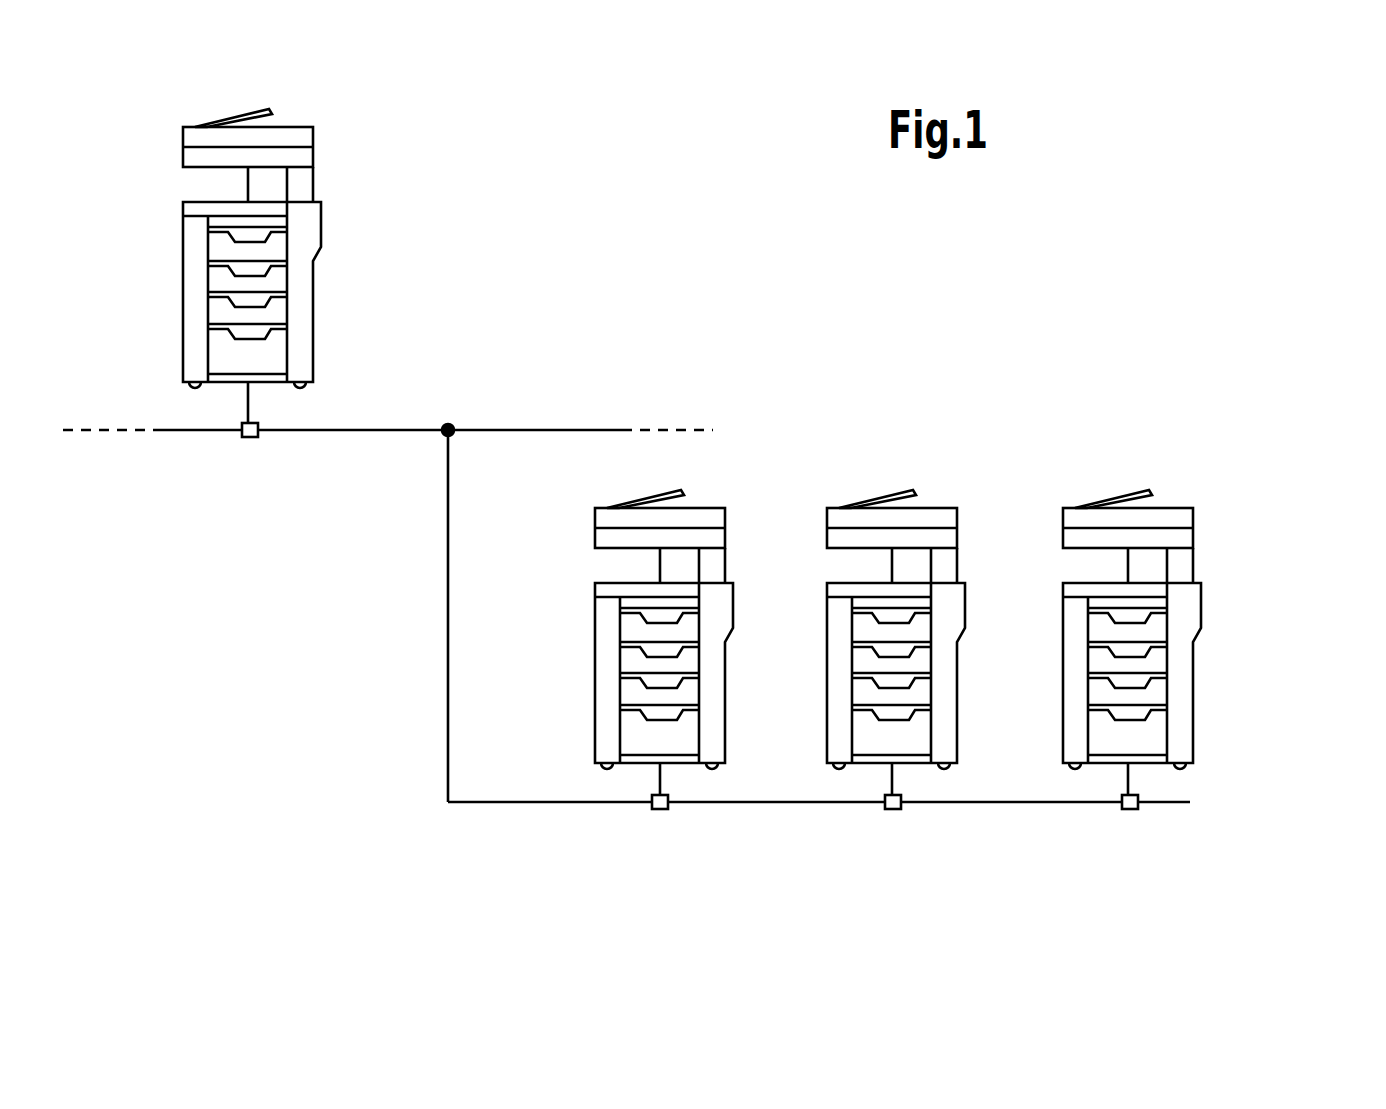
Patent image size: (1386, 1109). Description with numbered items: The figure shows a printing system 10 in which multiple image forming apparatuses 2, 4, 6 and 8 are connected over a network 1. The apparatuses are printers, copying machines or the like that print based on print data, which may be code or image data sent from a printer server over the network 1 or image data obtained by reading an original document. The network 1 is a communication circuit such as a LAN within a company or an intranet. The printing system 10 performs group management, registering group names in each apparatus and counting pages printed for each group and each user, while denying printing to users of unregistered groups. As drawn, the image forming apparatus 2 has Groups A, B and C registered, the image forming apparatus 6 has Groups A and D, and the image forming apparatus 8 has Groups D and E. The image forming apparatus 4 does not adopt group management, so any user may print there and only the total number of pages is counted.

The network 1 is at (447, 632).
The image forming apparatus 2 is at (322, 238).
The image forming apparatus 4 is at (712, 508).
The image forming apparatus 6 is at (932, 508).
The image forming apparatus 8 is at (1167, 508).
The printing system 10 is at (262, 622).